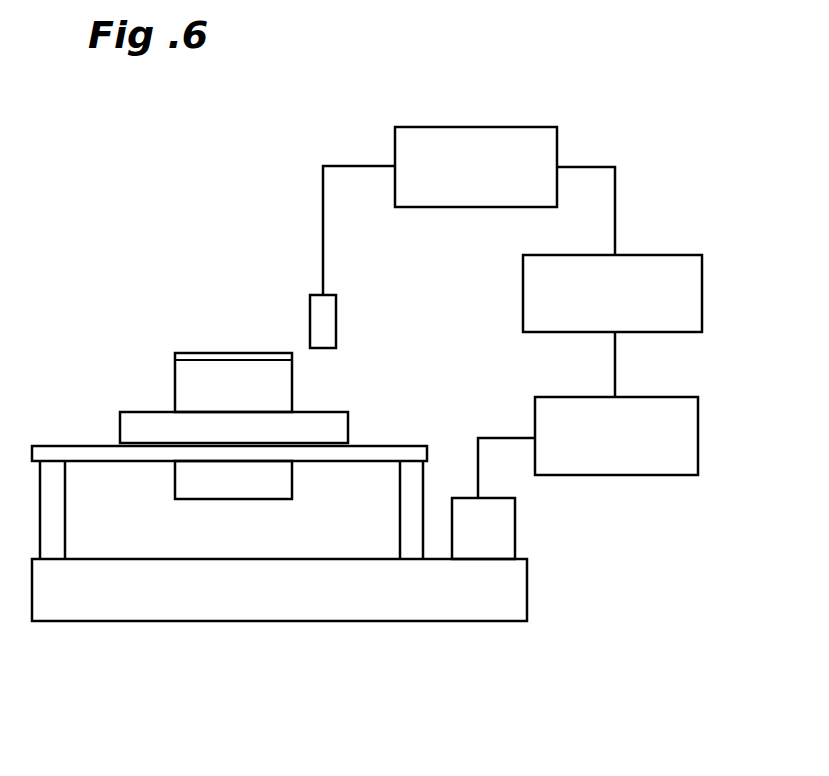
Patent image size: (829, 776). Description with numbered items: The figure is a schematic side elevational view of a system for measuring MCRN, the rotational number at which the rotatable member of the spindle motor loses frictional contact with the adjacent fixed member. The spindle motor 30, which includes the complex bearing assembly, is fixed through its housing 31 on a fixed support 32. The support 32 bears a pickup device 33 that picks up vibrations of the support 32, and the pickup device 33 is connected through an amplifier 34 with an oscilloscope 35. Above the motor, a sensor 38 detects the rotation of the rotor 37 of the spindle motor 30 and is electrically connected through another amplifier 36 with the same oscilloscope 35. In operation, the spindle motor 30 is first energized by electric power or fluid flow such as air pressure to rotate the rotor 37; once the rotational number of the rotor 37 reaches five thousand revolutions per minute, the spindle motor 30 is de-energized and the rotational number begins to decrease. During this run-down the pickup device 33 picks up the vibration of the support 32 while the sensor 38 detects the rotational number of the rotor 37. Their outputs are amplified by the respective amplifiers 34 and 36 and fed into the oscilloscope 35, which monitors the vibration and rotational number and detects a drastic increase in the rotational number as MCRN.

The spindle motor 30 is at (228, 360).
The housing 31 is at (207, 480).
The fixed support 32 is at (238, 605).
The pickup device 33 is at (498, 530).
The amplifier 34 is at (588, 447).
The oscilloscope 35 is at (612, 326).
The amplifier 36 is at (469, 211).
The rotor 37 is at (192, 385).
The sensor 38 is at (325, 325).